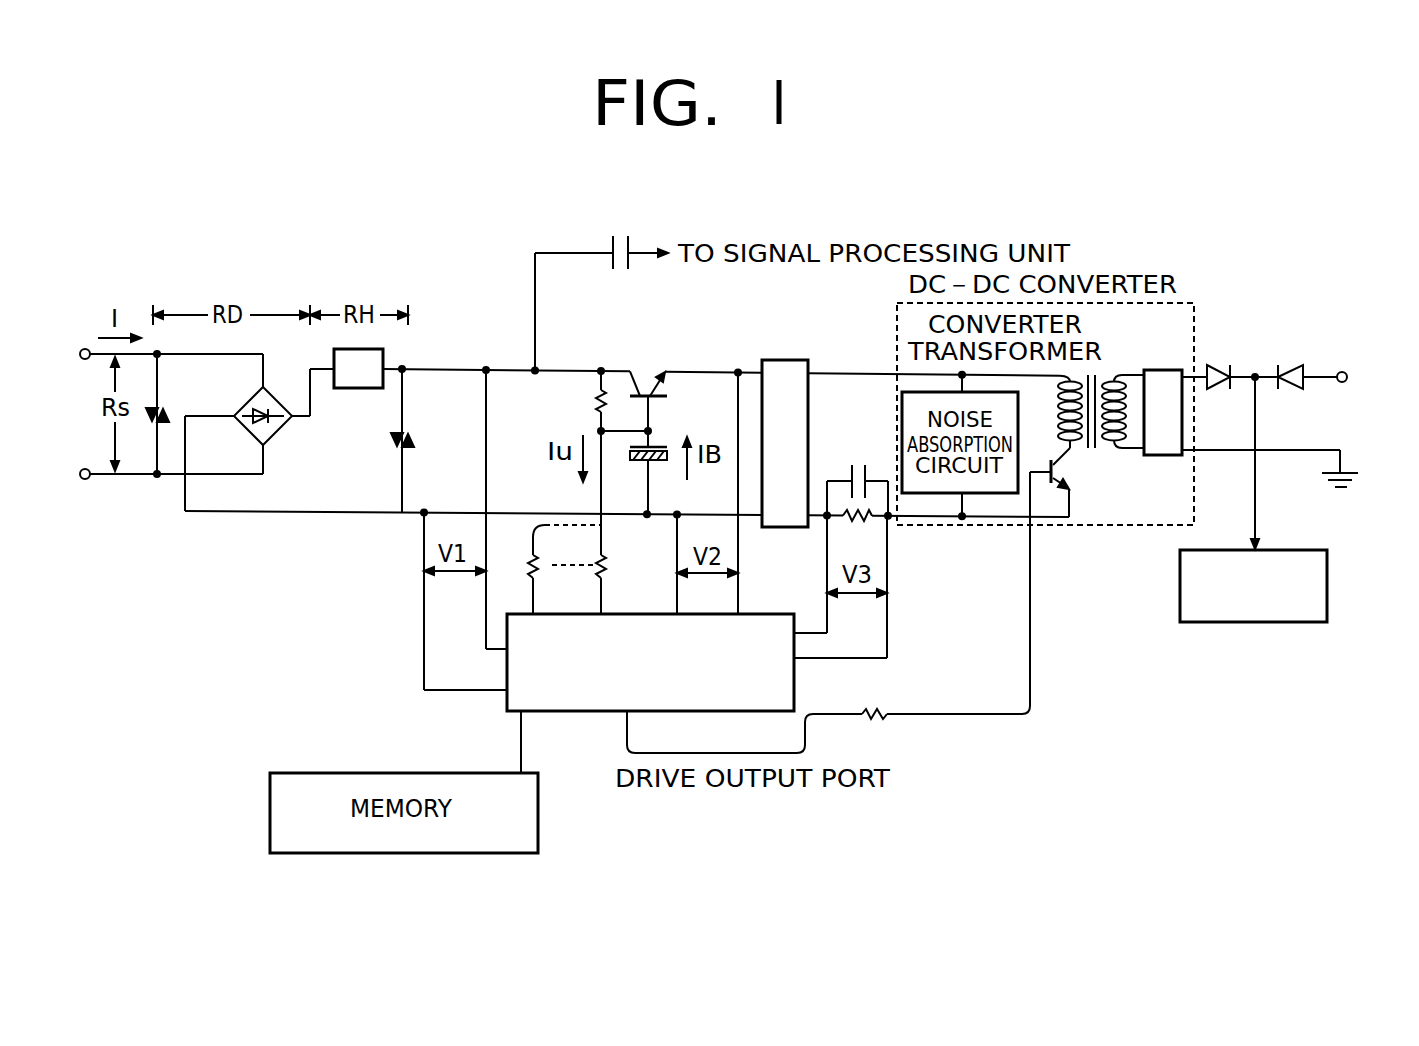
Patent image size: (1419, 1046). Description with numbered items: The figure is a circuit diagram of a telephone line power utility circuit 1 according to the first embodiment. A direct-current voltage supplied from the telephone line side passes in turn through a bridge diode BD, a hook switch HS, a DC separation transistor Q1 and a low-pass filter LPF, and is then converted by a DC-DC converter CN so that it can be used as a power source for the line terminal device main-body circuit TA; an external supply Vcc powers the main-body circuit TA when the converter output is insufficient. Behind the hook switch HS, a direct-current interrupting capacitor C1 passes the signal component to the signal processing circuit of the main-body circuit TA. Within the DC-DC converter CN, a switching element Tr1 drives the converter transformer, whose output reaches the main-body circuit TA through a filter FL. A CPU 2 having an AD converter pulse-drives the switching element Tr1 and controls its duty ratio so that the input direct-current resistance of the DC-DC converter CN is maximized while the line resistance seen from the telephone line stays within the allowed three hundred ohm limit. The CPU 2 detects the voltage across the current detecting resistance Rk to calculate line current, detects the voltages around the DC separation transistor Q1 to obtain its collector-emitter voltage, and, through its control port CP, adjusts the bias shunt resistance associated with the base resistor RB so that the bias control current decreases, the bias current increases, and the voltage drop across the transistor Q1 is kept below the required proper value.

The telephone line power utility circuit 1 is at (1248, 346).
The CPU having an AD converter 2 is at (572, 711).
The bridge diode BD is at (277, 426).
The hook switch HS is at (358, 368).
The direct-current interrupting capacitor C1 is at (601, 303).
The base resistor RB is at (580, 401).
The DC separation transistor Q1 is at (583, 360).
The low-pass filter LPF is at (785, 443).
The current detecting resistance Rk is at (857, 509).
The control port CP is at (567, 569).
The filter FL is at (1163, 412).
The switching element Tr1 is at (1073, 482).
The DC-DC converter CN is at (1057, 527).
The line terminal device main-body circuit TA is at (1268, 622).